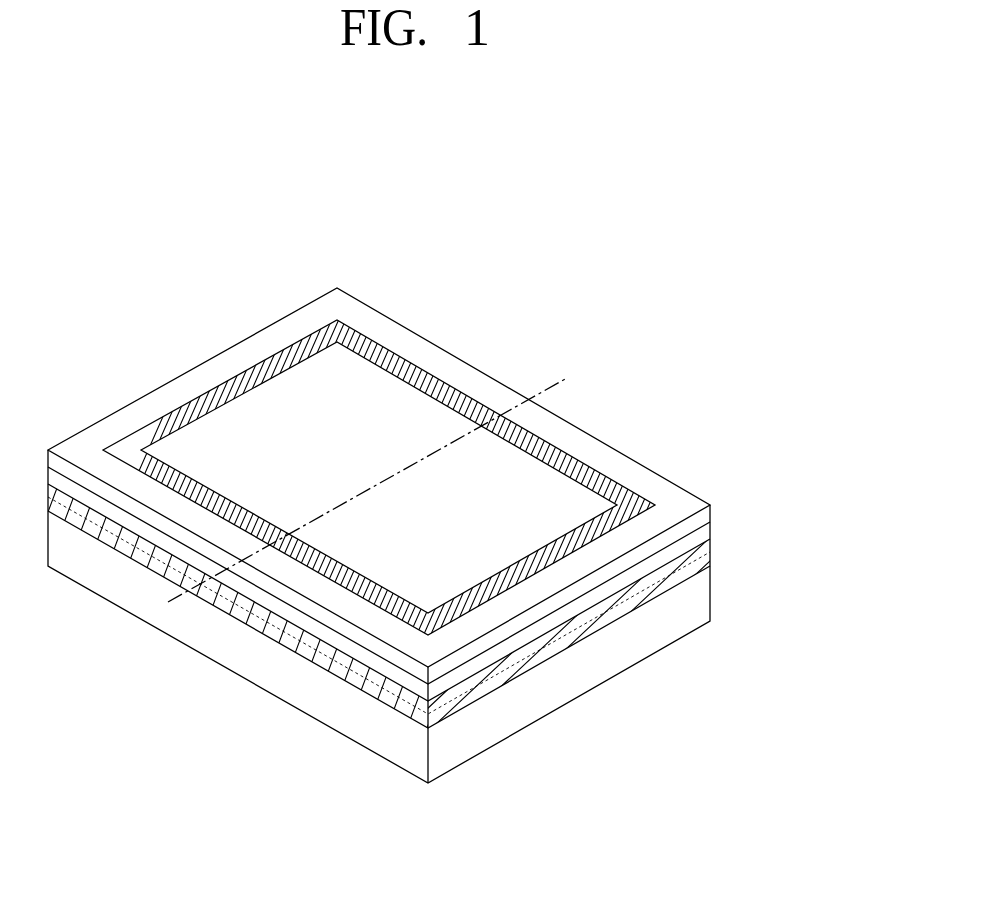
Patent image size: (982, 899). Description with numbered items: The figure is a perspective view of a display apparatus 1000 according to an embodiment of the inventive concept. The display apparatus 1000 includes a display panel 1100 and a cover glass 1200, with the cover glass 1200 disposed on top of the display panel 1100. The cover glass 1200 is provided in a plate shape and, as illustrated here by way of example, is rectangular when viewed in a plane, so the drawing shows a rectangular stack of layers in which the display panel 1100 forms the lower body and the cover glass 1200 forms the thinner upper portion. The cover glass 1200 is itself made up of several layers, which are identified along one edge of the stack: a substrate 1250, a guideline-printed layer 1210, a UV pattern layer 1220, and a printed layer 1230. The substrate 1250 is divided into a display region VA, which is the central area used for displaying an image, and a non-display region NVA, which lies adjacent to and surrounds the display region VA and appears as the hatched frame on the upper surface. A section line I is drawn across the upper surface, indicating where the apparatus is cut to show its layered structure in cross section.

The display apparatus 1000 is at (652, 317).
The display panel 1100 is at (702, 595).
The cover glass 1200 is at (808, 481).
The guideline-printed layer 1210 is at (636, 496).
The printed layer 1230 is at (710, 509).
The UV pattern layer 1220 is at (710, 531).
The substrate 1250 is at (710, 553).
The display region VA is at (373, 384).
The non-display region NVA is at (461, 372).
The section line I-I' I is at (168, 602).